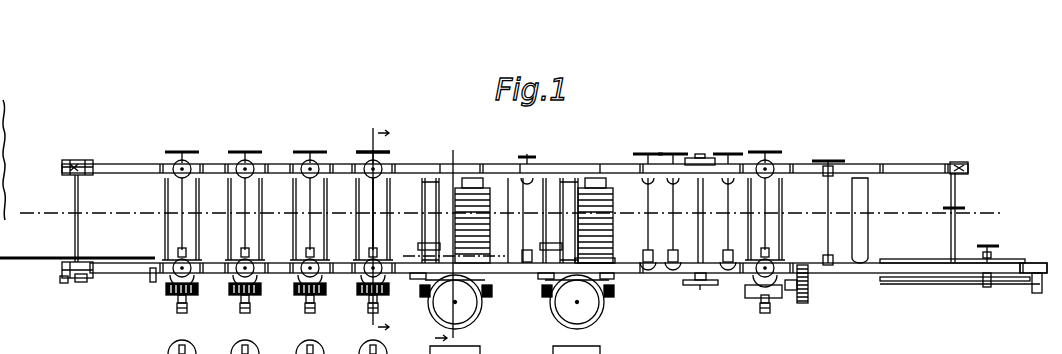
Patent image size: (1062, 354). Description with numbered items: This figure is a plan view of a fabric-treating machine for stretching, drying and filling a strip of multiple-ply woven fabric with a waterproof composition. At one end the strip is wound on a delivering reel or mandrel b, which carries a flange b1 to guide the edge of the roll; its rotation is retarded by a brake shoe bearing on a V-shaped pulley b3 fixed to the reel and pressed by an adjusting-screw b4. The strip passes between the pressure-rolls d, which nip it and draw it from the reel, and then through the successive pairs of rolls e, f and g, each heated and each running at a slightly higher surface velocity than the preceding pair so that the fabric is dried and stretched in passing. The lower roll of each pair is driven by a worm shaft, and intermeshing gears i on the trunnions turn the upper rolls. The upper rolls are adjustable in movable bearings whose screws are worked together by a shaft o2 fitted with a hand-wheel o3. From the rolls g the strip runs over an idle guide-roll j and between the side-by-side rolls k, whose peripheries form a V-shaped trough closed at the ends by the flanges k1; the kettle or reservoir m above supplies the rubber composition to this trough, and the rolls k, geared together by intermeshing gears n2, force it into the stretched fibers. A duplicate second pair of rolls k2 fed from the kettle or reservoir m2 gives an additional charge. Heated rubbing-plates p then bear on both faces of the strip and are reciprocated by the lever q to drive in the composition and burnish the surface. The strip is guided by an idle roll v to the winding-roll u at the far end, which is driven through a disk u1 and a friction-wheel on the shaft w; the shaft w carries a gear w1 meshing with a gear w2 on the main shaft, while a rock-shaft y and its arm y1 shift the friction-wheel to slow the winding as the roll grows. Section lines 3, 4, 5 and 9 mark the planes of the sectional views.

The section line 3 3 is at (526, 215).
The delivering reel or mandrel b is at (80, 236).
The flange b1 is at (37, 262).
The V-shaped pulley b3 is at (78, 280).
The adjusting-screw b4 is at (63, 280).
The pressure-rolls d is at (170, 196).
The rolls e is at (240, 196).
The rolls f is at (295, 199).
The rolls g is at (358, 197).
The intermeshing gears i is at (200, 296).
The hand-wheel o3 is at (365, 150).
The shaft o2 is at (370, 229).
The section line 4 4 is at (370, 225).
The rolls k is at (425, 203).
The flanges k1 is at (425, 246).
The second pair of rolls k2 is at (492, 232).
The section line 5 5 is at (452, 250).
The section line 9 9 is at (453, 258).
The kettle or reservoir m is at (482, 318).
The kettle or reservoir m2 is at (605, 316).
The intermeshing gears n2 is at (430, 296).
The idle guide-roll j is at (608, 255).
The heated rubbing-plates p is at (688, 256).
The lever q is at (710, 290).
The gear w1 is at (812, 298).
The idle roll v is at (868, 236).
The winding-roll u is at (956, 235).
The arm y1 is at (1000, 255).
The rock-shaft y is at (1010, 262).
The disk u1 is at (920, 282).
The gear w2 is at (990, 290).
The shaft w is at (1037, 292).